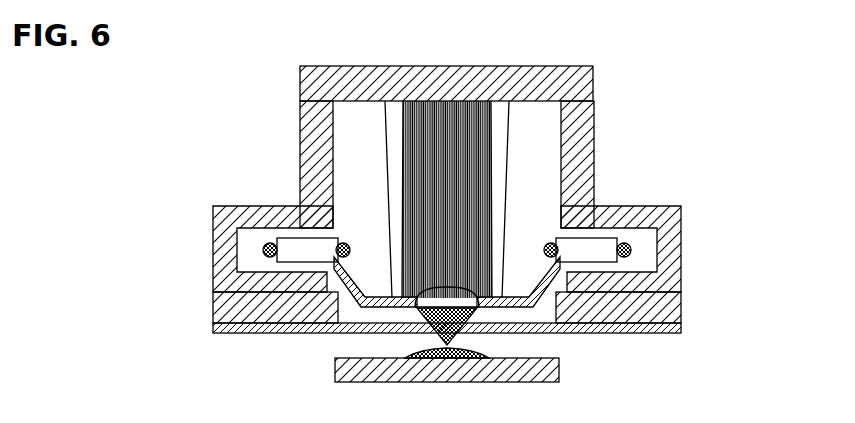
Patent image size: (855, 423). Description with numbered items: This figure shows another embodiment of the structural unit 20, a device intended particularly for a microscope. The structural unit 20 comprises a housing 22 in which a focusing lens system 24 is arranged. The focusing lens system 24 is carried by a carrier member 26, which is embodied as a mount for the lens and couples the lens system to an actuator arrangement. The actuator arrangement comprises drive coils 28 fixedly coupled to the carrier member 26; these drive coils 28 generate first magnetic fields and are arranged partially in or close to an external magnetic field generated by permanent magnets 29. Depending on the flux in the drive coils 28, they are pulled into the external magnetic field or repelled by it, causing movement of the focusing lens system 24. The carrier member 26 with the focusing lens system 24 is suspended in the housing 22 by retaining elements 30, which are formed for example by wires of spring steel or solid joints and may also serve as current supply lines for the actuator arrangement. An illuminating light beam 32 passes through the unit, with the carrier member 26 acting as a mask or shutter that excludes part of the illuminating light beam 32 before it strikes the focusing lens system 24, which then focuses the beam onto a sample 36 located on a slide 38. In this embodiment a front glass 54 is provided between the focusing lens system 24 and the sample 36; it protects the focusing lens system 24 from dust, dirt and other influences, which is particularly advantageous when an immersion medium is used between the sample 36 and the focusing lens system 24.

The structural unit 20 is at (296, 88).
The housing 22 is at (594, 118).
The focusing lens system 24 is at (430, 302).
The carrier member 26 is at (538, 302).
The drive coils 28 is at (258, 310).
The permanent magnets 29 is at (283, 213).
The retaining elements 30 is at (389, 196).
The illuminating light beam 32 is at (402, 196).
The sample 36 is at (475, 360).
The slide 38 is at (447, 370).
The front glass 54 is at (622, 338).